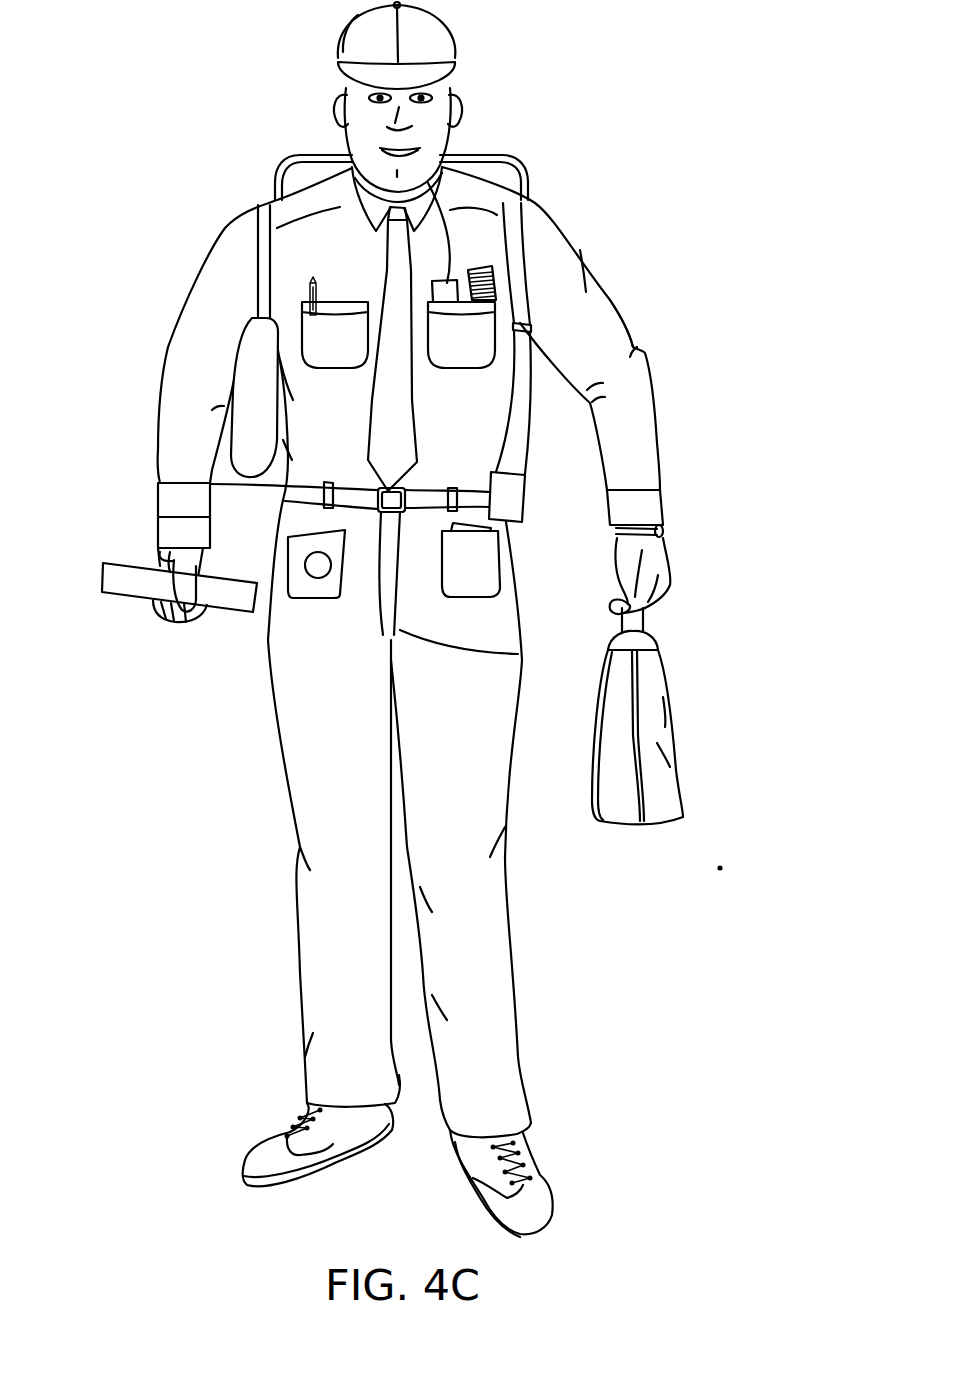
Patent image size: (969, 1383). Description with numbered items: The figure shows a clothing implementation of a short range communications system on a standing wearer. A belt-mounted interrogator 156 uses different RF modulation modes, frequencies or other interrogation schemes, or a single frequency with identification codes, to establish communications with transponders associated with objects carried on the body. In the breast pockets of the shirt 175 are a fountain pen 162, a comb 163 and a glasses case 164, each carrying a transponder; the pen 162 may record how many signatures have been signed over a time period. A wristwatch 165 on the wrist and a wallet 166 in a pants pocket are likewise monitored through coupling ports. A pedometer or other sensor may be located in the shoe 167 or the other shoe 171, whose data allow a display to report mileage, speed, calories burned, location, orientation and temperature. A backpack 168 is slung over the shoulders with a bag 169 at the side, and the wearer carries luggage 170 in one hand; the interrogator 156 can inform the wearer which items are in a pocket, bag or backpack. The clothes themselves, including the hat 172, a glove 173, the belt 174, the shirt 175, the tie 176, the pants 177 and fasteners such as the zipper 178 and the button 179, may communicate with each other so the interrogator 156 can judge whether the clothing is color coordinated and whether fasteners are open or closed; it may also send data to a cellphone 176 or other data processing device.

The interrogator 156 is at (510, 502).
The fountain pen 162 is at (313, 277).
The comb 163 is at (497, 283).
The glasses case 164 is at (450, 278).
The wristwatch 165 is at (664, 531).
The wallet 166 is at (496, 531).
The shoe 167 is at (532, 1211).
The backpack 168 is at (483, 175).
The bag 169 is at (248, 390).
The luggage 170 is at (663, 726).
The shoe 171 is at (270, 1157).
The hat 172 is at (457, 50).
The glove 173 is at (167, 563).
The belt 174 is at (160, 485).
The shirt 175 is at (580, 322).
The tie 176 is at (397, 417).
The pants 177 is at (358, 753).
The zipper 178 is at (518, 654).
The button 179 is at (310, 587).